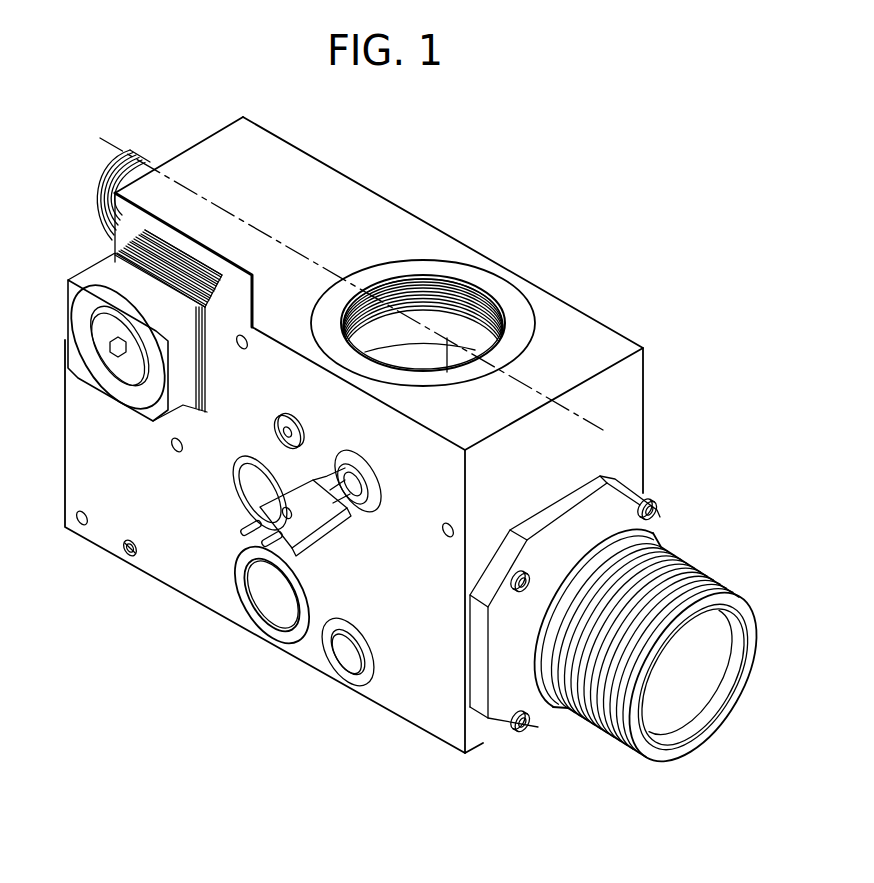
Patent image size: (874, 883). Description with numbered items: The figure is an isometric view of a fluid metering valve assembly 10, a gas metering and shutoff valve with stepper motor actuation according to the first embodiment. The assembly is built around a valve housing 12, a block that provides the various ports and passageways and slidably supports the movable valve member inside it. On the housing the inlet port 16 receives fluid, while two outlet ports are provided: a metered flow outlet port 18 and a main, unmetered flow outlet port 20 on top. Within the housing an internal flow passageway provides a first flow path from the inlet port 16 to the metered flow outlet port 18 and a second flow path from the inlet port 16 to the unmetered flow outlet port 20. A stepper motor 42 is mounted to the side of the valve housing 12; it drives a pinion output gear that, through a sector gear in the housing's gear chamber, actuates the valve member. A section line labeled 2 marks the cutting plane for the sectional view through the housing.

The fluid metering valve assembly 10 is at (634, 154).
The valve housing 12 is at (606, 324).
The inlet port 16 is at (688, 703).
The metered flow outlet port 18 is at (262, 612).
The unmetered flow outlet port 20 is at (453, 295).
The stepper motor 42 is at (80, 318).
The section line 2- 2 is at (678, 390).